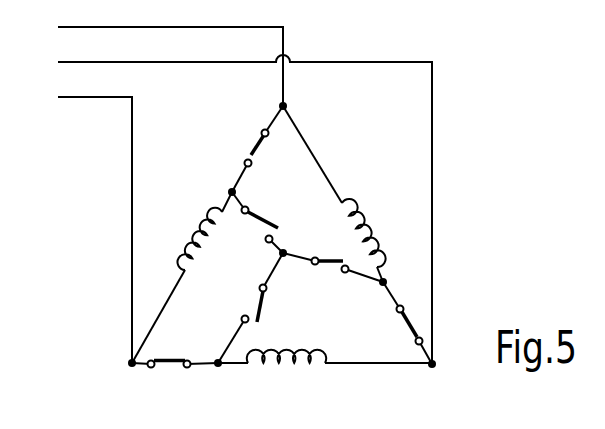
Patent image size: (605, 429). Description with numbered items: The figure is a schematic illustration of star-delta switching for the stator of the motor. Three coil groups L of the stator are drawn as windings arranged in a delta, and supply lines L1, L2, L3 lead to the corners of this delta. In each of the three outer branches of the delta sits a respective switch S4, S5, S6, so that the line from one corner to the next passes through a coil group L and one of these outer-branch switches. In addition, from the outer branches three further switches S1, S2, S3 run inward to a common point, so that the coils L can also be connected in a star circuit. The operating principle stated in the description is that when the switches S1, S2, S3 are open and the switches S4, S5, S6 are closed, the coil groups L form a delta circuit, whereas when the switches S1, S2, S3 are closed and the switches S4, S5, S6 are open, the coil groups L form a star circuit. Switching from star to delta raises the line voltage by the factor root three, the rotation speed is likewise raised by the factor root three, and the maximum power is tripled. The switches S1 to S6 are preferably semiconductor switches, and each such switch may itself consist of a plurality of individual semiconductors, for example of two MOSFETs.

The first supply line L1 is at (153, 59).
The second supply line L2 is at (227, 206).
The third supply line L3 is at (77, 223).
The coil group L is at (279, 296).
The switch S1 is at (333, 276).
The switch S2 is at (254, 308).
The switch S3 is at (263, 222).
The switch S4 is at (407, 320).
The switch S5 is at (175, 380).
The switch S6 is at (257, 149).